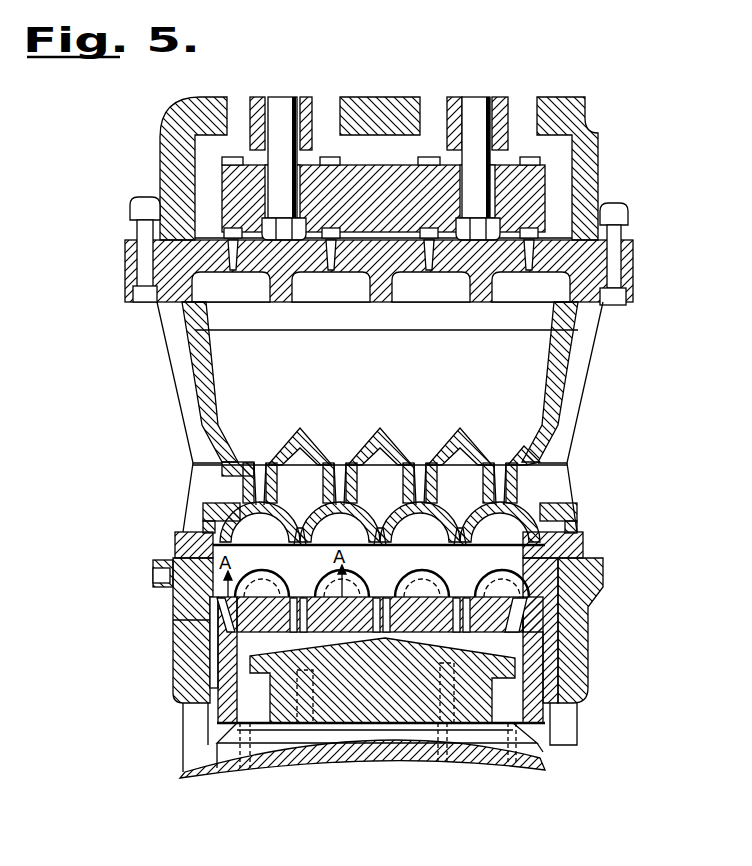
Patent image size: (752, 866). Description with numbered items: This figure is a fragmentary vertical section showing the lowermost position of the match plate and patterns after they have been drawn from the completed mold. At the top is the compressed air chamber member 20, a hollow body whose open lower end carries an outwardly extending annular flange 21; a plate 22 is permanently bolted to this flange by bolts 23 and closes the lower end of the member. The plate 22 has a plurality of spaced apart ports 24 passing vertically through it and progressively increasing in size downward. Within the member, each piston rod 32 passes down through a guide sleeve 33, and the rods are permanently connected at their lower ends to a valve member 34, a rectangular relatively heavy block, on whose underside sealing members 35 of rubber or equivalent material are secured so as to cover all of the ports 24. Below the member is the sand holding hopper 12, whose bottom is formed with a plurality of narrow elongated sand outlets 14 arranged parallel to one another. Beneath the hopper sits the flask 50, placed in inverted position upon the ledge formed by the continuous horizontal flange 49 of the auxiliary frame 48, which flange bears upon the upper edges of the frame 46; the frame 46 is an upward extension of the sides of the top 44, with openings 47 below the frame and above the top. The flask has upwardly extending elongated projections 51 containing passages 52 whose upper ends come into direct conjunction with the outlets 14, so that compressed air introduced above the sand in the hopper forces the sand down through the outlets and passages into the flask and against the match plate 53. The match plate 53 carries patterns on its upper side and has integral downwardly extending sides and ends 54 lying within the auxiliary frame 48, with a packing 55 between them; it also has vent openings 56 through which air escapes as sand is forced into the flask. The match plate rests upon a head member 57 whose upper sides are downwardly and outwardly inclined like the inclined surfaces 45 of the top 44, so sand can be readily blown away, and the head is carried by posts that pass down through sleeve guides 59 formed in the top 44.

The sand holding hopper 12 is at (582, 360).
The sand outlets 14 is at (260, 463).
The compressed air chamber member 20 is at (600, 134).
The annular flange 21 is at (630, 233).
The plate 22 is at (585, 272).
The bolts 23 is at (152, 253).
The ports 24 is at (234, 262).
The piston rod 32 is at (279, 120).
The guide sleeve 33 is at (312, 125).
The valve member 34 is at (545, 178).
The sealing members 35 is at (232, 230).
The top 44 is at (335, 762).
The inclined surfaces 45 is at (465, 760).
The frame 46 is at (590, 636).
The openings 47 is at (565, 722).
The auxiliary frame 48 is at (548, 657).
The horizontal flange 49 is at (583, 549).
The flask 50 is at (567, 514).
The elongated projections 51 is at (250, 488).
The passages 52 is at (330, 488).
The match plate 53 is at (418, 598).
The sides and ends 54 is at (510, 693).
The packing 55 is at (175, 626).
The vent openings 56 is at (263, 580).
The head member 57 is at (355, 738).
The sleeve guides 59 is at (540, 756).